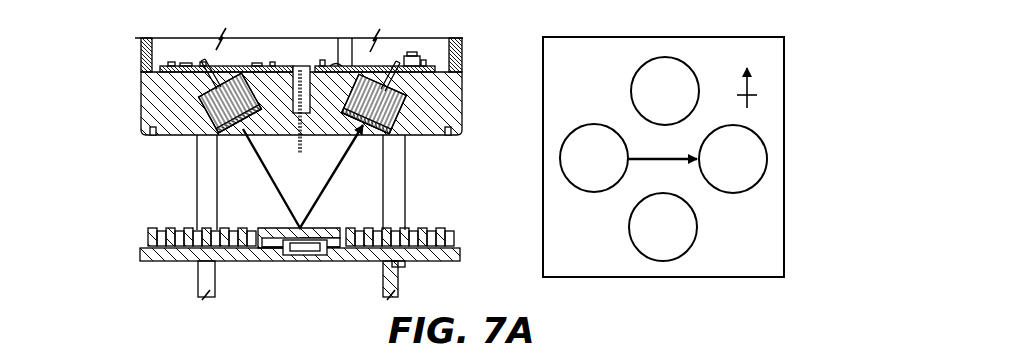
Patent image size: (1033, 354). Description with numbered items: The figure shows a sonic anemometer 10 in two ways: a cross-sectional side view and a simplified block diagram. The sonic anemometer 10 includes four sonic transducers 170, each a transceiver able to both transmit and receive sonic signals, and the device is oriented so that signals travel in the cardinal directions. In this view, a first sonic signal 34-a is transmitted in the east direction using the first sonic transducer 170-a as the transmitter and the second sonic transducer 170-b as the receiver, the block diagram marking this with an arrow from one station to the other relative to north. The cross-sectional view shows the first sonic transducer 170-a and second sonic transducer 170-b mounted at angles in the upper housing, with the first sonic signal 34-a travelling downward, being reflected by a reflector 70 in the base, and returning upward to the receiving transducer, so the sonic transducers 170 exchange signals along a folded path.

The sonic anemometer 10 is at (135, 66).
The first sonic transducer 170-a is at (212, 108).
The second sonic transducer 170-b is at (406, 112).
The reflector 70 is at (274, 228).
The first sonic signal 34-a is at (331, 178).
The sonic transducers 170 is at (632, 97).